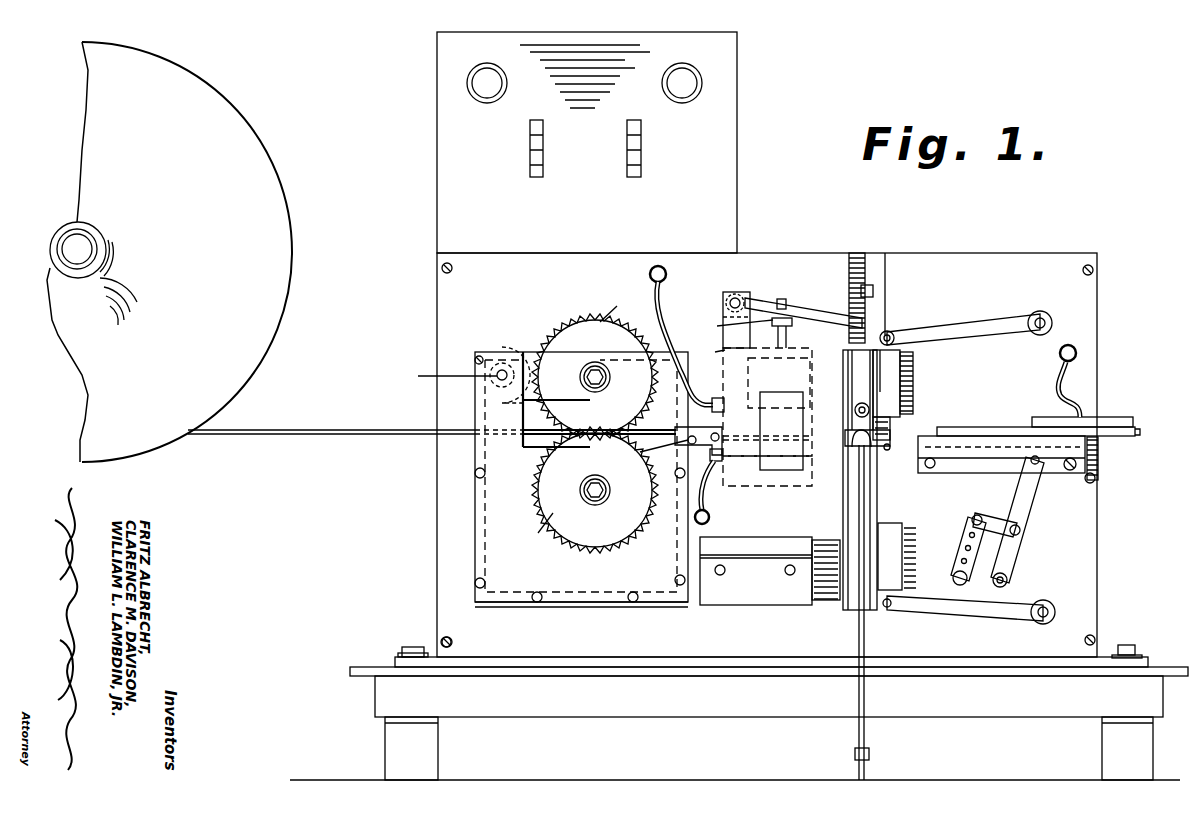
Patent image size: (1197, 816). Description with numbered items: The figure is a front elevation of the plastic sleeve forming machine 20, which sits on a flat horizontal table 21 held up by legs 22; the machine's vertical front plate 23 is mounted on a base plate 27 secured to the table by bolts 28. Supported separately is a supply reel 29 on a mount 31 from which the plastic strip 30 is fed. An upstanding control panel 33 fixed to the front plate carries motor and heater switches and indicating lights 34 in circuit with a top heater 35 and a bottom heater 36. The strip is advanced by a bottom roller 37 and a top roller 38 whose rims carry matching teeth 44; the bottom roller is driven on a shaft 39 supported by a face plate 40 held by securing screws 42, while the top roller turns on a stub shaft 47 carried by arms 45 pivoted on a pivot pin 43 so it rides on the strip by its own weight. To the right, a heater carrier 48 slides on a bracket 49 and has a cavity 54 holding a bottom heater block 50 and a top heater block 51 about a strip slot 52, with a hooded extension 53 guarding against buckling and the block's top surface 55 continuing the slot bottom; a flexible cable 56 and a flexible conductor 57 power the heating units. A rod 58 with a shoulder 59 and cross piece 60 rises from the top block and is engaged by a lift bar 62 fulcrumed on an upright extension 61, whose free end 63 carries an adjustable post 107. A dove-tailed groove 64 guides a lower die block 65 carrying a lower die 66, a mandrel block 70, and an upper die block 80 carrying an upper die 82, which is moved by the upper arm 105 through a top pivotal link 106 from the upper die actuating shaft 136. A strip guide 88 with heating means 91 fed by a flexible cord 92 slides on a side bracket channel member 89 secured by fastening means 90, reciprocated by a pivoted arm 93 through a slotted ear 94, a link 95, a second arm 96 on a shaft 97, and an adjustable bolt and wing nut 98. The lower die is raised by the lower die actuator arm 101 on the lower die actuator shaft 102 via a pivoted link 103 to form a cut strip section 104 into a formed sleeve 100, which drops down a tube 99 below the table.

The machine 20 is at (1028, 240).
The table 21 is at (1080, 708).
The legs 22 is at (1120, 767).
The front plate 23 is at (1085, 576).
The base plate 27 is at (1142, 664).
The bolts 28 is at (1128, 645).
The supply reel 29 is at (262, 200).
The strip 30 is at (282, 424).
The mount 31 is at (70, 240).
The control panel 33 is at (737, 140).
The indicating lights 34 is at (487, 83).
The top heater 35 is at (767, 402).
The bottom heater 36 is at (758, 470).
The bottom roller 37 is at (529, 531).
The top roller 38 is at (572, 333).
The shaft 39 is at (594, 504).
The face plate 40 is at (512, 500).
The securing screws 42 is at (478, 582).
The pivot pin 43 is at (437, 376).
The teeth 44 is at (615, 302).
The arms 45 is at (534, 352).
The stub shaft 47 is at (596, 368).
The heater carrier 48 is at (822, 535).
The bracket 49 is at (718, 598).
The bottom heater block 50 is at (800, 495).
The top heater block 51 is at (780, 398).
The strip slot 52 is at (698, 430).
The hooded extension 53 is at (648, 453).
The cavity 54 is at (707, 353).
The top surface 55 is at (767, 446).
The flexible cable 56 is at (698, 495).
The flexible conductor 57 is at (672, 330).
The rod 58 is at (798, 333).
The shoulder 59 is at (734, 326).
The cross piece 60 is at (788, 292).
The upright extension 61 is at (737, 298).
The lift bar 62 is at (810, 316).
The free end 63 is at (890, 331).
The dove-tailed groove 64 is at (855, 262).
The lower die block 65 is at (895, 542).
The lower die 66 is at (877, 496).
The mandrel block 70 is at (895, 457).
The upper die block 80 is at (902, 380).
The upper die 82 is at (901, 394).
The strip guide 88 is at (968, 440).
The side bracket channel member 89 is at (1099, 443).
The fastening means 90 is at (1077, 465).
The heating means 91 is at (1125, 422).
The flexible cord 92 is at (1094, 380).
The pivoted arm 93 is at (1028, 511).
The slotted ear 94 is at (1040, 475).
The link 95 is at (1019, 532).
The second arm 96 is at (962, 556).
The shaft 97 is at (966, 588).
The adjustable bolt and wing nut 98 is at (978, 517).
The tube 99 is at (868, 695).
The formed sleeve 100 is at (872, 754).
The lower die actuator arm 101 is at (1006, 618).
The lower die actuator shaft 102 is at (1046, 602).
The pivoted link 103 is at (895, 600).
The strip section 104 is at (882, 437).
The upper arm 105 is at (985, 316).
The top pivotal link 106 is at (915, 365).
The adjustable post 107 is at (873, 291).
The upper die actuating shaft 136 is at (1053, 323).